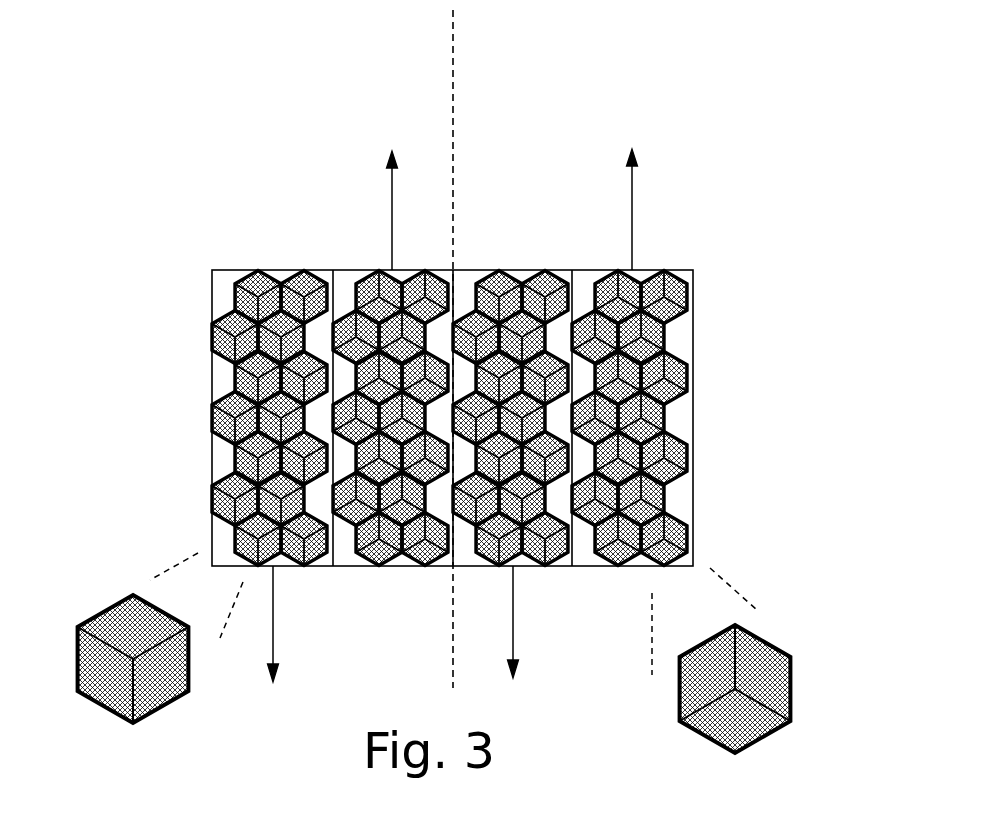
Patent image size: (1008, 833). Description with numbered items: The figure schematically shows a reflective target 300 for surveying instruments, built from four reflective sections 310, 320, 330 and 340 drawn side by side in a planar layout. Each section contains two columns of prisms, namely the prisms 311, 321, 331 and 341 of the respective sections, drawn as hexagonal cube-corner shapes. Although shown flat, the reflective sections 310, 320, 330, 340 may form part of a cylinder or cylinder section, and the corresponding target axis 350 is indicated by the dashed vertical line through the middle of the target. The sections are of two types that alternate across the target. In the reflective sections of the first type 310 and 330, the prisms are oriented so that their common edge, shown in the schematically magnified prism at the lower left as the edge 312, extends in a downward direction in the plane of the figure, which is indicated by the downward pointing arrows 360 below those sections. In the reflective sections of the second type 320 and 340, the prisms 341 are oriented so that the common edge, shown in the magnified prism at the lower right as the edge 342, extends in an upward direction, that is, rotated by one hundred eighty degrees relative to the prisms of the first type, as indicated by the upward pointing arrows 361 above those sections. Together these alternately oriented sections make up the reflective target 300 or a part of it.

The reflective target 300 is at (404, 418).
The reflective section of the first type 310 is at (221, 479).
The prisms 311 is at (323, 567).
The edge 312 is at (138, 685).
The reflective section of the second type 320 is at (392, 418).
The prisms 321 is at (442, 567).
The reflective section of the first type 330 is at (518, 422).
The prisms 331 is at (562, 567).
The reflective section of the second type 340 is at (725, 493).
The prisms 341 is at (672, 567).
The edge 342 is at (735, 668).
The target axis 350 is at (453, 115).
The arrows 360 is at (513, 650).
The arrows 361 is at (392, 190).